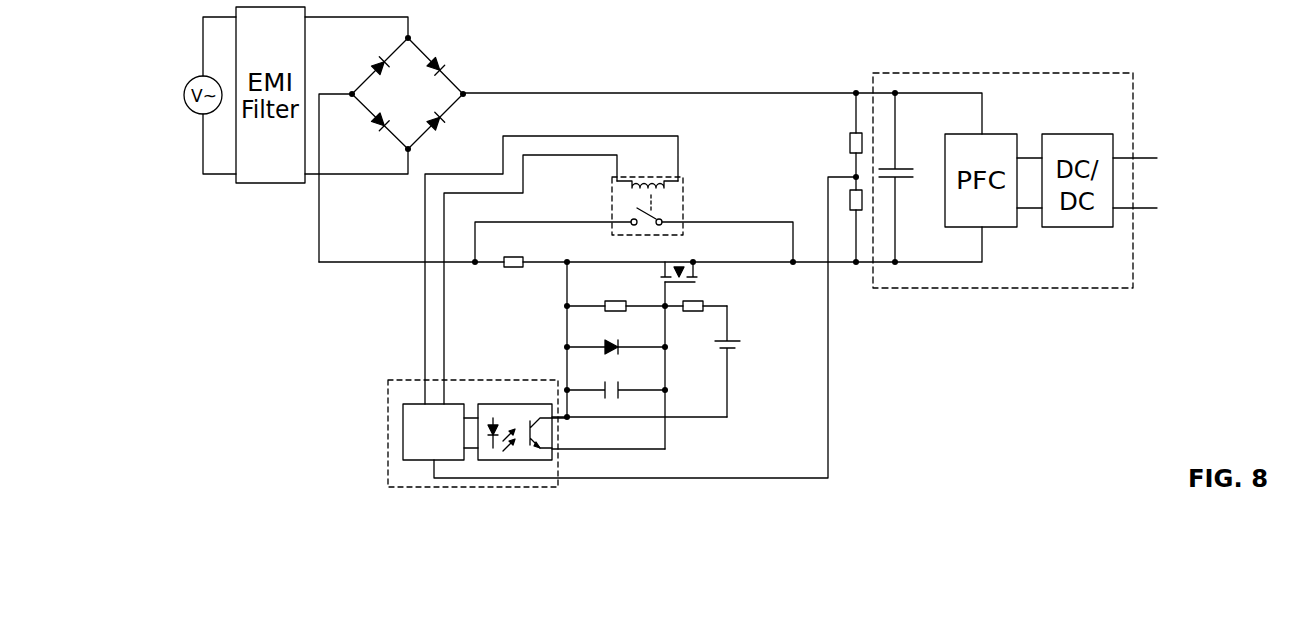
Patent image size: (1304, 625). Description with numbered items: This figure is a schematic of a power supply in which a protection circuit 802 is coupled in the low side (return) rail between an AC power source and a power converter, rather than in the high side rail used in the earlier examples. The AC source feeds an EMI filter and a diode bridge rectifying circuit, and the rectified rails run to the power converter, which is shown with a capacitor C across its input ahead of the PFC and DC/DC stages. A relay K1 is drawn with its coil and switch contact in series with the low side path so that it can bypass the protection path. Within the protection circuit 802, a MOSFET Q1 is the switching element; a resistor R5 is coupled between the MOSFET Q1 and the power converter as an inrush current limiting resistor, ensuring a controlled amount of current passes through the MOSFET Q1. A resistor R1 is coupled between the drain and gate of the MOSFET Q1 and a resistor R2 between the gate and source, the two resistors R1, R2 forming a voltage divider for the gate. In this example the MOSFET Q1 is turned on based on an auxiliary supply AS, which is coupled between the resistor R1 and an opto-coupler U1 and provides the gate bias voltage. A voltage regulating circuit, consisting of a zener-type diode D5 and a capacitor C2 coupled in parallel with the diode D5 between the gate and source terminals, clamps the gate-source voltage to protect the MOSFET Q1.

The relay K1 is at (625, 203).
The MOSFET Q1 is at (692, 256).
The resistor R5 is at (513, 279).
The resistor R2 is at (616, 291).
The resistor R1 is at (696, 322).
The diode D5 is at (616, 334).
The capacitor C2 is at (616, 377).
The auxiliary supply AS is at (779, 399).
The protection circuit 802 is at (687, 359).
The opto-coupler U1 is at (477, 432).
The bulk capacitor C is at (900, 177).